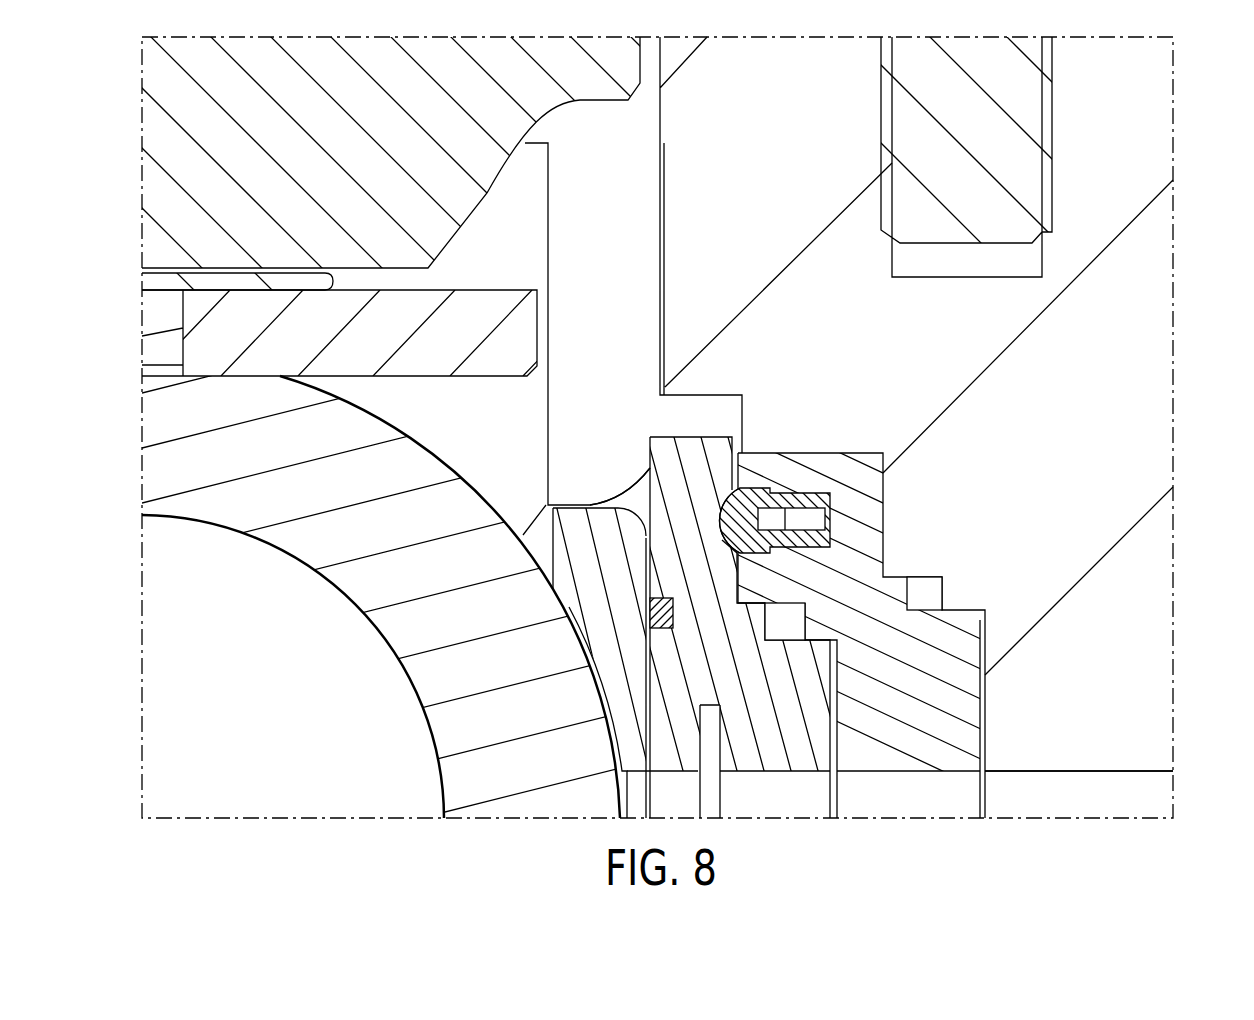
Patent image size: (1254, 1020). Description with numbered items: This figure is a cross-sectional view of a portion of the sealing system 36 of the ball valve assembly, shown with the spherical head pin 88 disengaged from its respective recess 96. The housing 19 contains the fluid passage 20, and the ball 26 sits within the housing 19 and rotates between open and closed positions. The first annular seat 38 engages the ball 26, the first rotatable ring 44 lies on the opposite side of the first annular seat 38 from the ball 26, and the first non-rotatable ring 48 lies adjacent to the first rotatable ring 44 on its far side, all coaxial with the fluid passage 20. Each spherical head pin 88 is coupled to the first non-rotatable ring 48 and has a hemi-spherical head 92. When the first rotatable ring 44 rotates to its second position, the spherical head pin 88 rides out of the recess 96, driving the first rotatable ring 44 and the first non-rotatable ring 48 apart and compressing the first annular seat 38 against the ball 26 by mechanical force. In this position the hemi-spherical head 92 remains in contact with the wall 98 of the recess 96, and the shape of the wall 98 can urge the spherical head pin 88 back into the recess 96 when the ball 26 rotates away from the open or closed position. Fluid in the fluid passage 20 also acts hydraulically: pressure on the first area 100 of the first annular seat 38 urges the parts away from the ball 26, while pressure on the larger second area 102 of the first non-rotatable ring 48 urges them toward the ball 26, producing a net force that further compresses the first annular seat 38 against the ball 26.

The housing 19 is at (1068, 760).
The fluid passage 20 is at (1128, 773).
The ball 26 is at (243, 512).
The sealing system 36 is at (597, 407).
The first annular seat 38 is at (571, 606).
The first rotatable ring 44 is at (697, 565).
The first non-rotatable ring 48 is at (927, 752).
The spherical head pin 88 is at (757, 496).
The hemi-spherical head 92 is at (720, 517).
The recess 96 is at (728, 543).
The wall 98 is at (720, 513).
The first area 100 is at (609, 704).
The second area 102 is at (908, 588).